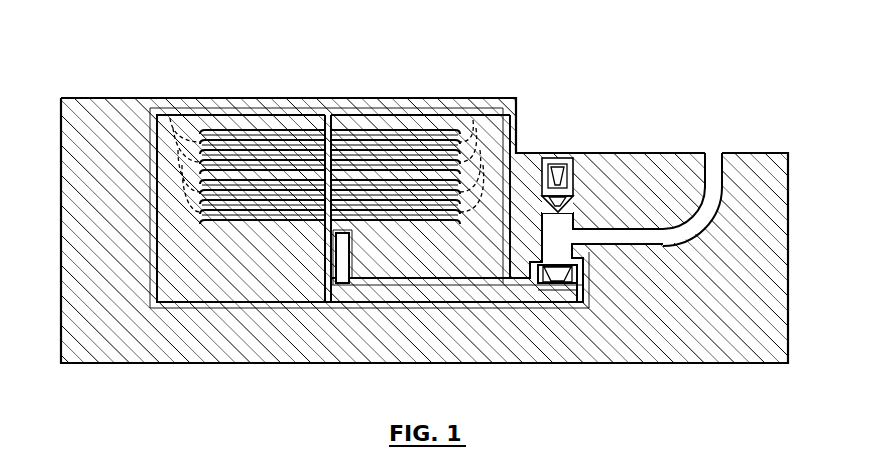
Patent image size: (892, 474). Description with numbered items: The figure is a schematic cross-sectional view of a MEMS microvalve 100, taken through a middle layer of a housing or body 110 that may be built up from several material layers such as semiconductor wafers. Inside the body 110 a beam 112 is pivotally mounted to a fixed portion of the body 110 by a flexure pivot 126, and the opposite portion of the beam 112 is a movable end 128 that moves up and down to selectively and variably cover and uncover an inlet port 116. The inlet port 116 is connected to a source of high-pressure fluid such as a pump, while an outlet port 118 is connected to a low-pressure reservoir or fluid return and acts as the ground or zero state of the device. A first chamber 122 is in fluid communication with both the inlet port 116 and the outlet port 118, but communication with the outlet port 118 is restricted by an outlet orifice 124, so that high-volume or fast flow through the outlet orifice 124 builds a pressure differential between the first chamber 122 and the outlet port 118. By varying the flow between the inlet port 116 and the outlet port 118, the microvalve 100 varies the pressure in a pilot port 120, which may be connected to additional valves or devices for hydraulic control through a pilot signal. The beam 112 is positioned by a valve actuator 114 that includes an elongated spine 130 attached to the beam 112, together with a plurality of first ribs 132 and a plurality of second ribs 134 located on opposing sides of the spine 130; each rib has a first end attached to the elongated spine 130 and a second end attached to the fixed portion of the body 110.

The MEMS microvalve 100 is at (230, 84).
The body 110 is at (127, 339).
The beam 112 is at (490, 291).
The valve actuator 114 is at (278, 230).
The inlet port 116 is at (572, 264).
The outlet port 118 is at (575, 157).
The pilot port 120 is at (707, 152).
The first chamber 122 is at (542, 246).
The outlet orifice 124 is at (573, 203).
The flexure pivot 126 is at (345, 262).
The movable end 128 is at (558, 290).
The elongated spine 130 is at (332, 128).
The first ribs 132 is at (170, 118).
The second ribs 134 is at (473, 120).